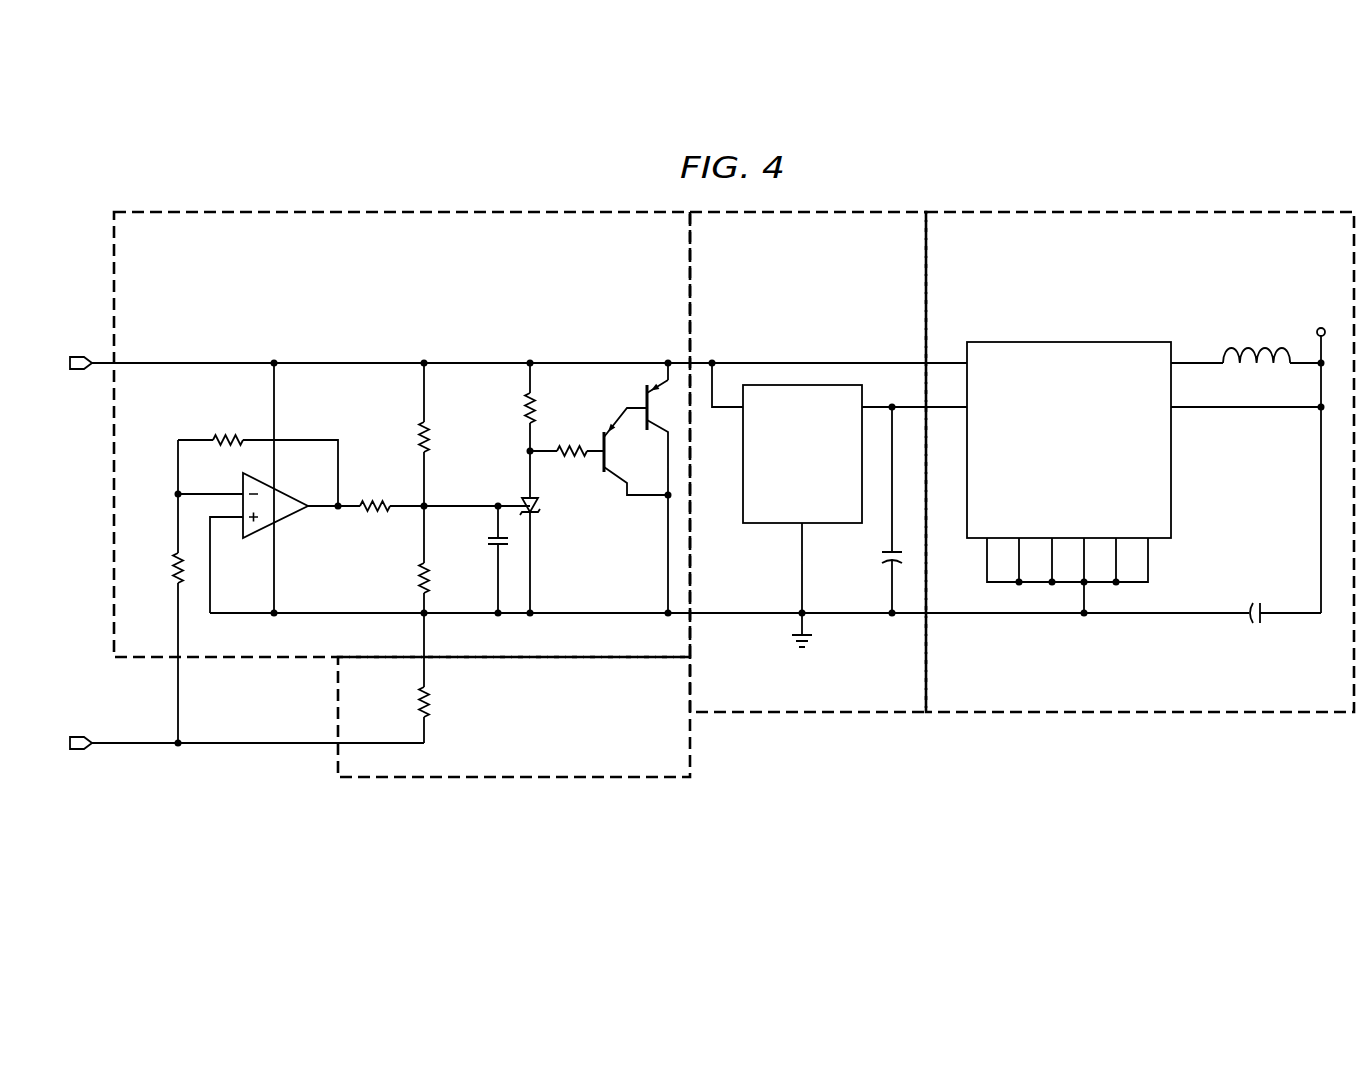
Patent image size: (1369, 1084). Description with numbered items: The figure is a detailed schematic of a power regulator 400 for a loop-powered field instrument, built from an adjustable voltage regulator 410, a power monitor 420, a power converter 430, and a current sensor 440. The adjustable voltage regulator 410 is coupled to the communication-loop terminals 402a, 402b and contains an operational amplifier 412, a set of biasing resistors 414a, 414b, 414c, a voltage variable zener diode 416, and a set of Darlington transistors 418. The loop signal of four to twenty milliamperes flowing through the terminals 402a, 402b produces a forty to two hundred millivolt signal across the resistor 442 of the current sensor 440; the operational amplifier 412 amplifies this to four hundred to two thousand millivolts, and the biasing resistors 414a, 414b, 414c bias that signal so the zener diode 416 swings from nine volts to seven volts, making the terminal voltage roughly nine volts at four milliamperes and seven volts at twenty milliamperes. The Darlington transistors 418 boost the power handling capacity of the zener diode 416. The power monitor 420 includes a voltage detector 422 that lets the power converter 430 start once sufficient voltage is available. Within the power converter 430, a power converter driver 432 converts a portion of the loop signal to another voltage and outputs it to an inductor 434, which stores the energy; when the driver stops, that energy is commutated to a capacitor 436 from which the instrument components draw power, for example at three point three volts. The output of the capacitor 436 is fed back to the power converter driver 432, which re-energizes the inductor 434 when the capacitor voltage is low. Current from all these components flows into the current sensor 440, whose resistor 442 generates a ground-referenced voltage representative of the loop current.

The power regulator 400 is at (1176, 149).
The terminal 402a is at (77, 357).
The terminal 402b is at (77, 737).
The adjustable voltage regulator 410 is at (384, 297).
The operational amplifier 412 is at (290, 520).
The biasing resistor 414a is at (419, 434).
The biasing resistor 414b is at (387, 517).
The biasing resistor 414c is at (419, 578).
The voltage variable zener diode 416 is at (540, 501).
The Darlington transistors 418 is at (647, 498).
The power monitor 420 is at (789, 297).
The voltage detector 422 is at (777, 524).
The power converter 430 is at (1109, 297).
The power converter driver 432 is at (1171, 460).
The inductor 434 is at (1249, 344).
The capacitor 436 is at (1252, 632).
The current sensor 440 is at (700, 742).
The resistor 442 is at (415, 700).